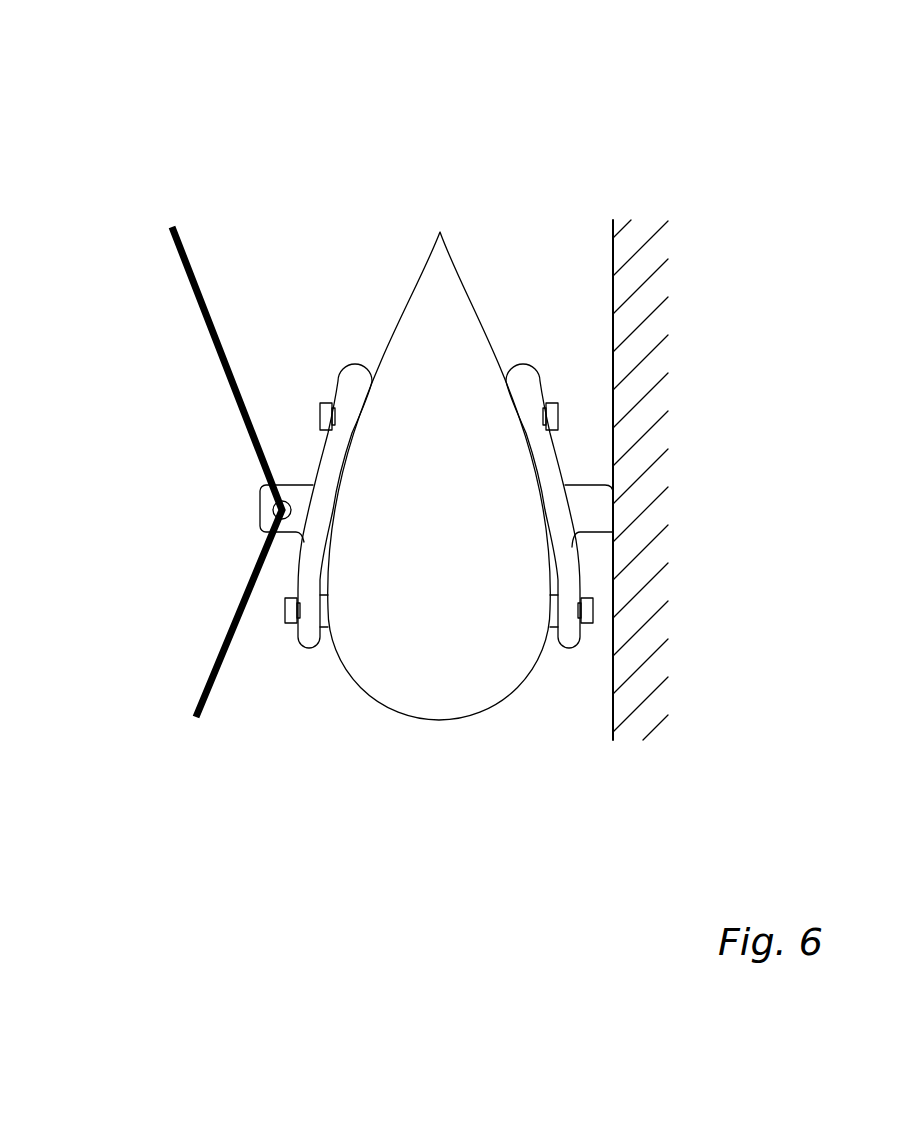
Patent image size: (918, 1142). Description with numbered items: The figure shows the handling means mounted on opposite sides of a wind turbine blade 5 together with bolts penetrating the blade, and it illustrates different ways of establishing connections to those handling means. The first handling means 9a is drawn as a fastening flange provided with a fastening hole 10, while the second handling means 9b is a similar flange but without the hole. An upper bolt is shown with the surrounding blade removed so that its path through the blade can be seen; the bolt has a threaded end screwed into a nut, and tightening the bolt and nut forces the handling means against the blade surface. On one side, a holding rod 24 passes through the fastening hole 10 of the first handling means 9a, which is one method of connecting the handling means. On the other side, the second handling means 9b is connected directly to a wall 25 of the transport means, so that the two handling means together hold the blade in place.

The teardrop-shaped body 5 is at (440, 272).
The first handling means 9a is at (357, 368).
The second handling means 9b is at (605, 517).
The fastening hole 10 is at (272, 510).
The holding rod 24 is at (175, 222).
The wall 25 is at (627, 222).